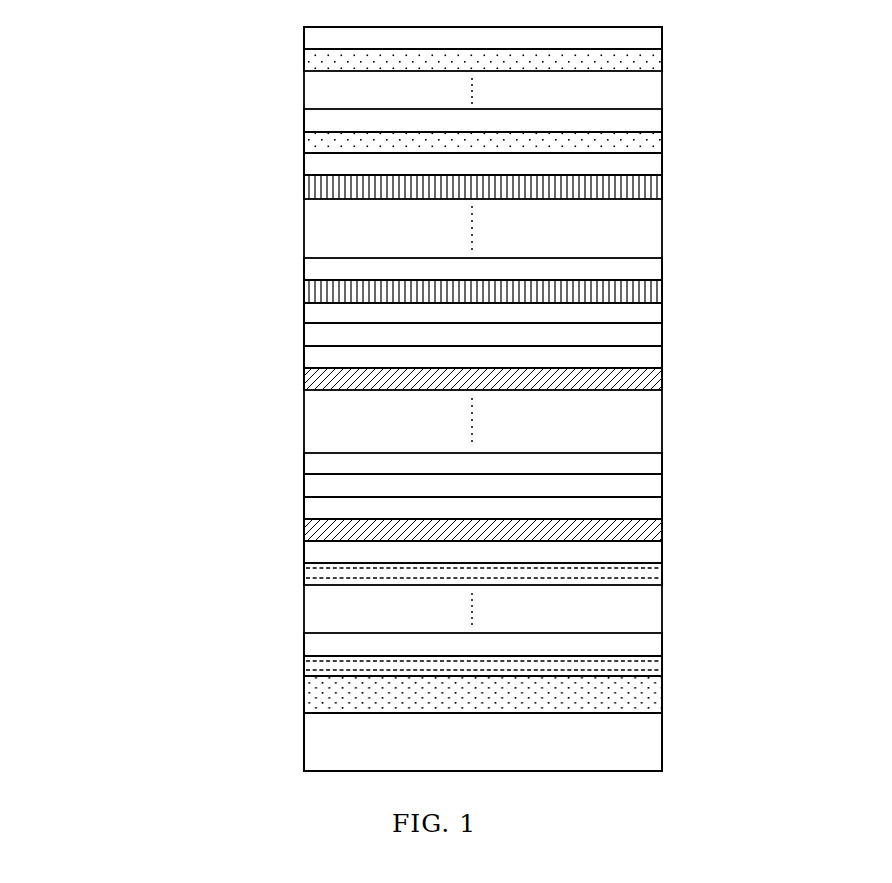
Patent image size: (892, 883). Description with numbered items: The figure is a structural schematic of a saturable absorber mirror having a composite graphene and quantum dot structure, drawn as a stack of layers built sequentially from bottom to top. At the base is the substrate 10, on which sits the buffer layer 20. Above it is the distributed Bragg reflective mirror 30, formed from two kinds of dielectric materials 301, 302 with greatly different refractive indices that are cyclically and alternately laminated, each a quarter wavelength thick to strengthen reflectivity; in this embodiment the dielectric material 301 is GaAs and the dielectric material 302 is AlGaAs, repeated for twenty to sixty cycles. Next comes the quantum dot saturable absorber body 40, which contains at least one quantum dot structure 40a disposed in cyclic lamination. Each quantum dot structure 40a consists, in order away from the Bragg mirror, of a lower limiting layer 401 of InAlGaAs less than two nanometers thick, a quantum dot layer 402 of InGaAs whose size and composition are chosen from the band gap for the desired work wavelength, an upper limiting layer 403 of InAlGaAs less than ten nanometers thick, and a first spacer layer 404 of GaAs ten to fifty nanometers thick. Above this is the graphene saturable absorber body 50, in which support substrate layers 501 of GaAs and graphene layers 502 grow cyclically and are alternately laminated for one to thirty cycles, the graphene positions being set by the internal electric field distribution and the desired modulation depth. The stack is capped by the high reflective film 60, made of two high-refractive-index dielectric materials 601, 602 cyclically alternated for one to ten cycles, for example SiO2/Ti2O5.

The substrate 10 is at (320, 742).
The buffer layer 20 is at (320, 696).
The distributed Bragg reflective mirror 30 is at (218, 543).
The dielectric material 301 is at (322, 575).
The dielectric material 302 is at (322, 552).
The quantum dot saturable absorber body 40 is at (218, 302).
The quantum dot structure 40a is at (667, 304).
The lower limiting layer 401 is at (322, 381).
The quantum dot layer 402 is at (322, 358).
The upper limiting layer 403 is at (322, 336).
The first spacer layer 404 is at (322, 313).
The graphene saturable absorber body 50 is at (218, 152).
The support substrate layer 501 is at (322, 188).
The graphene layer 502 is at (322, 165).
The high reflective film 60 is at (218, 28).
The dielectric material 601 is at (322, 63).
The dielectric material 602 is at (322, 41).